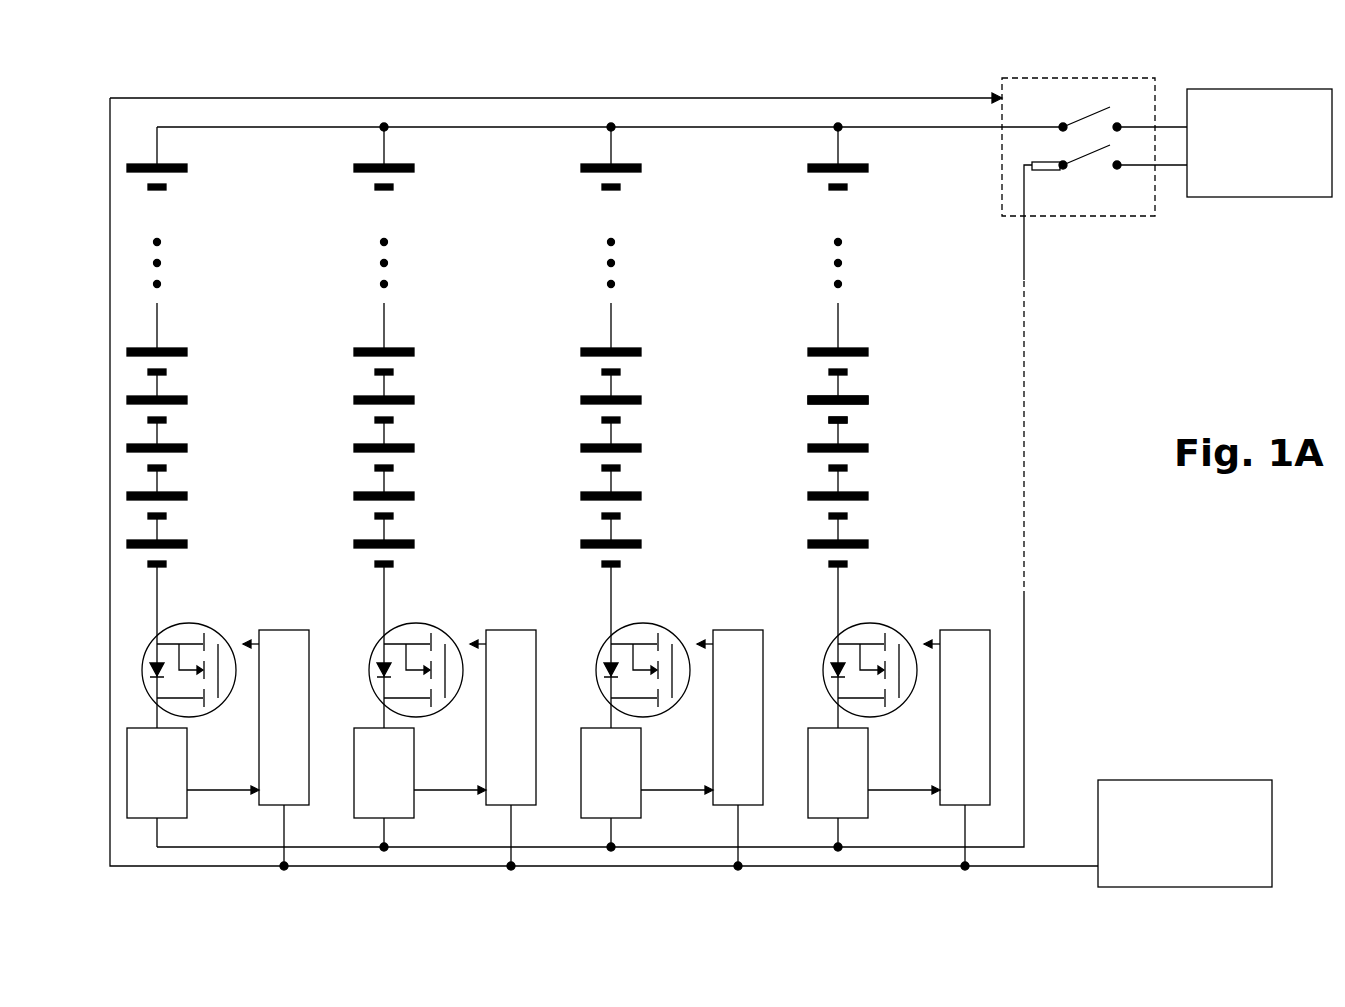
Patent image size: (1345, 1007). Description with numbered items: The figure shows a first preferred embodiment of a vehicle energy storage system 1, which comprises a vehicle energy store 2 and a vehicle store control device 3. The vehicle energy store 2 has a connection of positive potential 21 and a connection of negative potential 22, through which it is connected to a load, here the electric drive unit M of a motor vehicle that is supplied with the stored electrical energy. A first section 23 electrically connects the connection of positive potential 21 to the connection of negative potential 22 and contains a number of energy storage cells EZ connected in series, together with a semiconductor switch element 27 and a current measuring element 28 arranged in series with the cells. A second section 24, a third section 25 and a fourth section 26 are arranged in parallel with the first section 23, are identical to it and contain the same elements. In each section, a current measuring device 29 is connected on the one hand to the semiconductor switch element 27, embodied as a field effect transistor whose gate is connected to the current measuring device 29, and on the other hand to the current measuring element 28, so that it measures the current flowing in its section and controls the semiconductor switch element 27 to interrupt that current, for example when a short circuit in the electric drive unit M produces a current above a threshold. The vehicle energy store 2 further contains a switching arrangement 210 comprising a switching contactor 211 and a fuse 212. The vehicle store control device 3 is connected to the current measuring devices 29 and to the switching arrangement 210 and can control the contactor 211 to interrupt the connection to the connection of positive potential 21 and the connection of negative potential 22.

The vehicle energy storage system 1 is at (334, 36).
The vehicle energy store 2 is at (985, 343).
The vehicle store control device 3 is at (1195, 742).
The connection of positive potential 21 is at (1121, 122).
The connection of negative potential 22 is at (1120, 170).
The first section 23 is at (909, 380).
The second section 24 is at (611, 150).
The third section 25 is at (384, 150).
The fourth section 26 is at (157, 150).
The semiconductor switch element 27 is at (214, 628).
The current measuring element 28 is at (187, 780).
The current measuring device 29 is at (300, 630).
The switching arrangement 210 is at (1094, 143).
The switching contactor 211 is at (1110, 145).
The fuse 212 is at (1050, 172).
The electric drive unit M is at (1247, 89).
The energy storage cells EZ is at (895, 385).